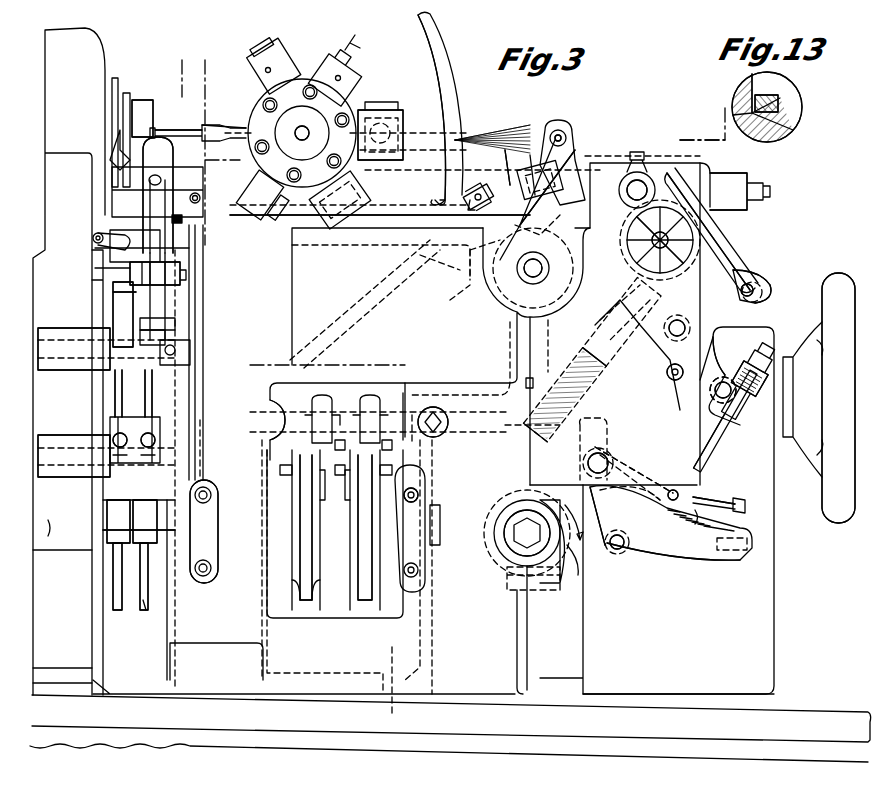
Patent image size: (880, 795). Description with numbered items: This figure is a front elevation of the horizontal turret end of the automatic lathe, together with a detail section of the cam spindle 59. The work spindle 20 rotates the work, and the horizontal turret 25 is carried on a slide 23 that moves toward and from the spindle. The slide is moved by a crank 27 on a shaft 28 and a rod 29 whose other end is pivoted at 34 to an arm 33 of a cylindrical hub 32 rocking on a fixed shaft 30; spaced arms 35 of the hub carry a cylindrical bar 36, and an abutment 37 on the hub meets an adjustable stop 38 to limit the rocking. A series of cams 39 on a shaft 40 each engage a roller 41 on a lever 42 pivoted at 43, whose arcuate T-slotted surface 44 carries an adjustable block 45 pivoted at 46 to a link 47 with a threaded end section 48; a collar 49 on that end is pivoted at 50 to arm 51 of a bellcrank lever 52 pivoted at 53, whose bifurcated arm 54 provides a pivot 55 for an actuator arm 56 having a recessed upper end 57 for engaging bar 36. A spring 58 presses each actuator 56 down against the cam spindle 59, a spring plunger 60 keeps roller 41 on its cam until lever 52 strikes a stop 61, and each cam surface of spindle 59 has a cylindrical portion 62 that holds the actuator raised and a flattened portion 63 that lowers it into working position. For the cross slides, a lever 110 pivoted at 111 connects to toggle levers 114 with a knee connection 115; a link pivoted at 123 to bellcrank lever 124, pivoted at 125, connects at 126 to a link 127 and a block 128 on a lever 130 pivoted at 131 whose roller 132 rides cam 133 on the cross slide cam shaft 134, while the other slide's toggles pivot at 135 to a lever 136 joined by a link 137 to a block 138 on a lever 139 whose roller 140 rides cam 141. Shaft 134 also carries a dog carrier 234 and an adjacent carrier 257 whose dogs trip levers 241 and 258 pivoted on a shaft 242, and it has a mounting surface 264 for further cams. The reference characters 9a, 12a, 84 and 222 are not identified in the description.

In FIG. 3, the center line of shaft 9a is at (178, 100).
In FIG. 13, the center line of shaft 9a is at (725, 140).
In FIG. 3, the center line 12a is at (240, 62).
In FIG. 3, the work spindle 20 is at (147, 100).
In FIG. 3, the horizontal turret 25 is at (255, 118).
In FIG. 3, the tool turret hub 84 is at (305, 133).
In FIG. 3, the crank 27 is at (410, 107).
In FIG. 3, the shaft 28 is at (400, 112).
In FIG. 3, the rod 29 is at (495, 132).
In FIG. 3, the abutment 37 is at (520, 168).
In FIG. 3, the set-screw 38 is at (478, 190).
In FIG. 3, the slide 23 is at (418, 195).
In FIG. 3, the pivotal connection 34 is at (558, 138).
In FIG. 3, the arm 33 is at (575, 150).
In FIG. 3, the cylindrical bar 36 is at (640, 188).
In FIG. 3, the recessed upper end 57 is at (668, 180).
In FIG. 3, the shaft 30 is at (533, 268).
In FIG. 3, the spaced arms 35 is at (605, 258).
In FIG. 3, the cylindrical hub 32 is at (475, 282).
In FIG. 3, the cam spindle 59 is at (640, 268).
In FIG. 13, the cam spindle 59 is at (775, 95).
In FIG. 3, the spring actuated plunger 60 is at (638, 312).
In FIG. 3, the actuator arm 56 is at (720, 255).
In FIG. 3, the spring 58 is at (745, 275).
In FIG. 3, the pivotal mounting 55 is at (752, 288).
In FIG. 3, the arm 54 is at (768, 295).
In FIG. 3, the pivot 53 is at (673, 335).
In FIG. 3, the bellcrank lever 52 is at (667, 368).
In FIG. 3, the stop 61 is at (678, 380).
In FIG. 3, the arm 51 is at (728, 382).
In FIG. 3, the collar 49 is at (745, 372).
In FIG. 3, the pivotal connection 50 is at (732, 385).
In FIG. 3, the threaded outer end section 48 is at (757, 388).
In FIG. 3, the link 47 is at (720, 445).
In FIG. 3, the pivot 43 is at (607, 462).
In FIG. 3, the arcuate T-slotted upper surface 44 is at (620, 462).
In FIG. 3, the pivotal connection 46 is at (672, 490).
In FIG. 3, the adjustable block 45 is at (720, 500).
In FIG. 3, the roller 41 is at (620, 540).
In FIG. 3, the lever 42 is at (725, 560).
In FIG. 3, the cams 39 is at (590, 545).
In FIG. 3, the shaft 40 is at (500, 545).
In FIG. 3, the shaft 242 is at (462, 418).
In FIG. 3, the trip lever 241 is at (410, 450).
In FIG. 3, the carrier 257 is at (305, 605).
In FIG. 3, the dog carrier 234 is at (365, 605).
In FIG. 3, the handle 222 is at (825, 530).
In FIG. 3, the lever 258 is at (268, 455).
In FIG. 3, the lever 110 is at (150, 190).
In FIG. 3, the pivot 111 is at (90, 238).
In FIG. 3, the toggle levers 114 is at (155, 310).
In FIG. 3, the pivotal knee connection 115 is at (178, 280).
In FIG. 3, the pivot 123 is at (113, 298).
In FIG. 3, the bellcrank lever 124 is at (118, 317).
In FIG. 3, the lever 136 is at (170, 323).
In FIG. 3, the pivotal connection 135 is at (170, 333).
In FIG. 3, the pivot 125 is at (192, 345).
In FIG. 3, the pivot 126 is at (100, 353).
In FIG. 3, the link 127 is at (117, 392).
In FIG. 3, the link 137 is at (153, 394).
In FIG. 3, the block 138 is at (165, 445).
In FIG. 3, the pivot 131 is at (185, 455).
In FIG. 3, the block 128 is at (100, 458).
In FIG. 3, the lever 130 is at (112, 508).
In FIG. 3, the lever 139 is at (143, 508).
In FIG. 3, the cross slide cam shaft 134 is at (232, 520).
In FIG. 3, the roller 132 is at (110, 542).
In FIG. 3, the mounting surface 264 is at (50, 548).
In FIG. 3, the roller 140 is at (145, 560).
In FIG. 3, the cam 133 is at (115, 600).
In FIG. 3, the cam 141 is at (146, 605).
In FIG. 13, the flattened portion 63 is at (782, 105).
In FIG. 13, the cylindrical portion 62 is at (798, 120).